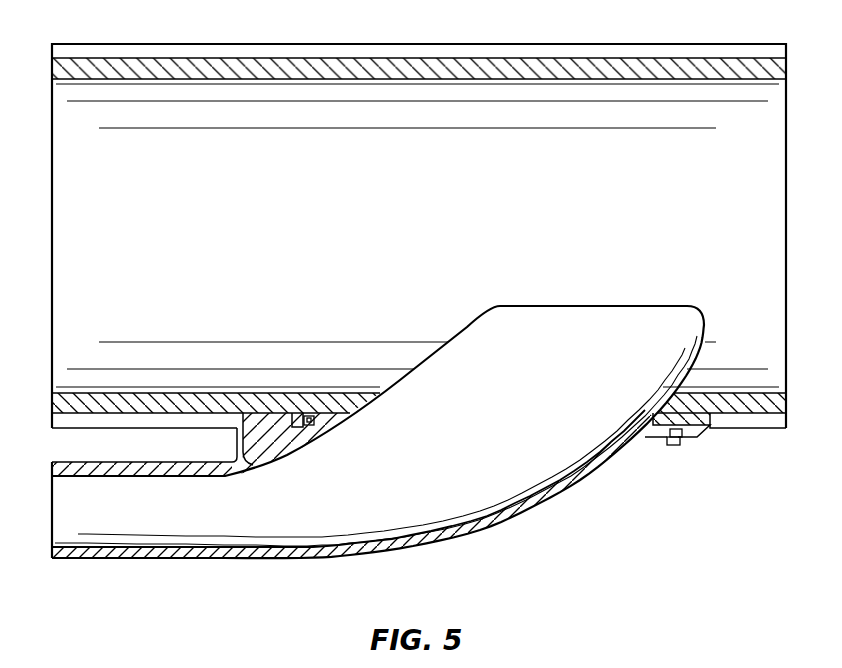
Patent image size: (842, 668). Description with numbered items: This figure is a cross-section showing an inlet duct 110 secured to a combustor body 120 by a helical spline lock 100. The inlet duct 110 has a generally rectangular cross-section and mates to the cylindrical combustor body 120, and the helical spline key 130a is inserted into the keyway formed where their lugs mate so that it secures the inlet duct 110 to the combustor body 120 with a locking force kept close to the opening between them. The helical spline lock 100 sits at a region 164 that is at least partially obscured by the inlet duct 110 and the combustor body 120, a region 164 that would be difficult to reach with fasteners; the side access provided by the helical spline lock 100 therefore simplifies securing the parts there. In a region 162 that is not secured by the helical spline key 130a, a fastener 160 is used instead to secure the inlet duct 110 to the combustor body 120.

The helical spline lock 100 is at (226, 434).
The inlet duct 110 is at (147, 558).
The combustor body 120 is at (753, 414).
The helical spline key 130a is at (313, 428).
The fastener 160 is at (675, 448).
The region not secured by a helical spline key 162 is at (658, 452).
The region at least partially obscured by the inlet duct and the combustor body 164 is at (297, 452).